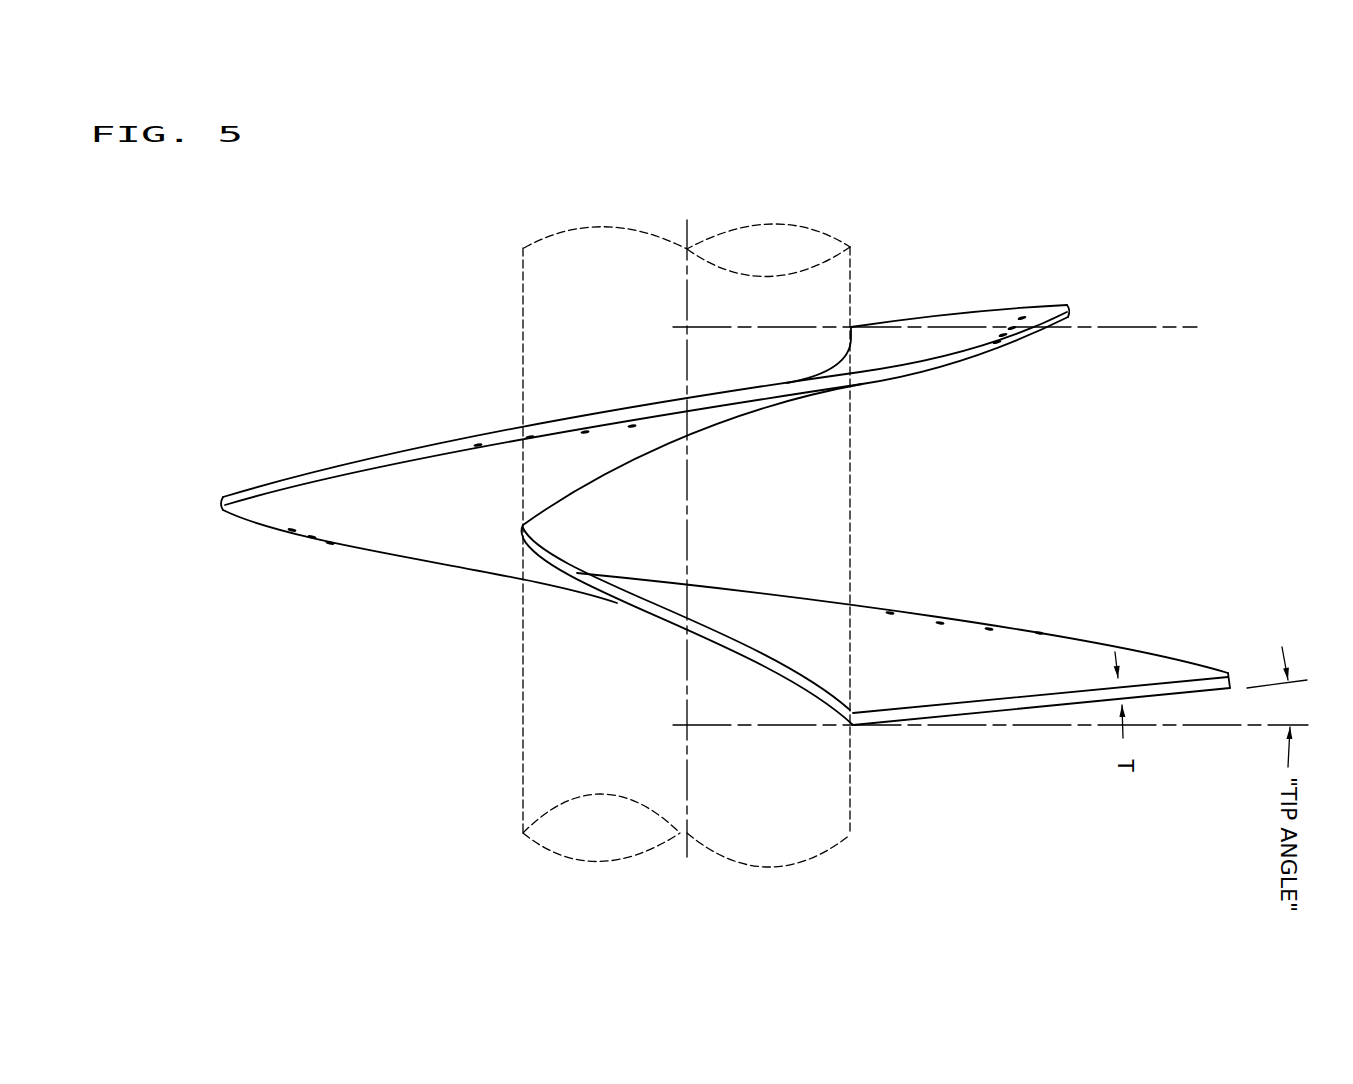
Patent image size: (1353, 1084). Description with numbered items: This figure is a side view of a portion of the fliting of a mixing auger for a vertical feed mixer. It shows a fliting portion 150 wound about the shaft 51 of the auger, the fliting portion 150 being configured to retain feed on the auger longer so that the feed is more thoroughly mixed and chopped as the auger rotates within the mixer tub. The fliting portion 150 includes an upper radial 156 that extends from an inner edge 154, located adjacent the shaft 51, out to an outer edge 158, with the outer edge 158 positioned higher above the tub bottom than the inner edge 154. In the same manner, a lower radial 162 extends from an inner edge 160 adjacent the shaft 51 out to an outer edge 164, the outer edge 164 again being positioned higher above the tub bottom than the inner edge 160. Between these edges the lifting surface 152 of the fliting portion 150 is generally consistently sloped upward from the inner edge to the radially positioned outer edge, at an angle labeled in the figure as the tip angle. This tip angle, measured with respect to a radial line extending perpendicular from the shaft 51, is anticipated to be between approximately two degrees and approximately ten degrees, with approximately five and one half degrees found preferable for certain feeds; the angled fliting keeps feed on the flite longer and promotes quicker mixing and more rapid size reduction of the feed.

The shaft 51 is at (568, 298).
The fliting portion 150 is at (747, 489).
The lifting surface 152 is at (925, 625).
The inner edge 154 is at (852, 325).
The upper radial 156 is at (963, 313).
The outer edge 158 is at (1067, 304).
The inner edge 160 is at (853, 724).
The lower radial 162 is at (1017, 700).
The outer edge 164 is at (1230, 673).